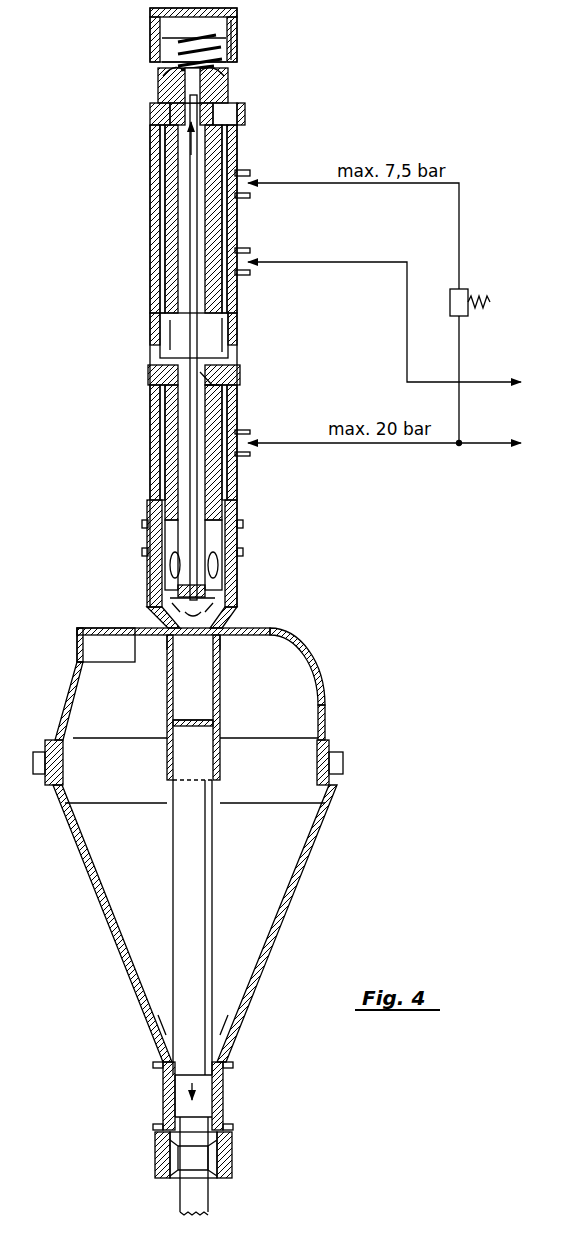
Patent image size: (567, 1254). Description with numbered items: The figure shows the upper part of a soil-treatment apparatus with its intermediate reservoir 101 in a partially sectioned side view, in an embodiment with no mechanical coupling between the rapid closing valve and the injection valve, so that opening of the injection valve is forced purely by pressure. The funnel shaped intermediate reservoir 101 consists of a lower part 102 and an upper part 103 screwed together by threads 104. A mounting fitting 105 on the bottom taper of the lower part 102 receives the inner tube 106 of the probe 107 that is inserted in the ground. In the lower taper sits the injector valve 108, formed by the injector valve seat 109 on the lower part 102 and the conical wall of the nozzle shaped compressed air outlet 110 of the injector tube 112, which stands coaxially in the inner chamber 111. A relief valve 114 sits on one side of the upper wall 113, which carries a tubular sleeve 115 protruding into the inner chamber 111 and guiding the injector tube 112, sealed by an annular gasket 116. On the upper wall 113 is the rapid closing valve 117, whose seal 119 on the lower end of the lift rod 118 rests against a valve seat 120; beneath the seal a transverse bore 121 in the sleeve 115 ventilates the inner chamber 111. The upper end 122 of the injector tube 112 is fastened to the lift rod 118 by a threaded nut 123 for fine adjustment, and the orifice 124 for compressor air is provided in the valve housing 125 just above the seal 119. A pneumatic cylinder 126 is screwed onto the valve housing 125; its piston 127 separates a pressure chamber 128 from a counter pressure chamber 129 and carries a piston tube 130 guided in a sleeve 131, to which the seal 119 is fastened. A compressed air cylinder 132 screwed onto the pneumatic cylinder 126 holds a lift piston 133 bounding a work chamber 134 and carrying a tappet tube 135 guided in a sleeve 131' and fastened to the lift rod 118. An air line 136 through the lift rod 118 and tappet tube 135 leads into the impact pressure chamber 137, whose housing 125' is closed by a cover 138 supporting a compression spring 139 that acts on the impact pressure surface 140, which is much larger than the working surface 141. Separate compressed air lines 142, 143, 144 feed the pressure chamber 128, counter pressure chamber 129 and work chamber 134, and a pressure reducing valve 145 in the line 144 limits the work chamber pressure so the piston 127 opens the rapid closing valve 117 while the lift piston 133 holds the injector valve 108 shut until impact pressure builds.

The intermediate reservoir 101 is at (322, 829).
The lower part 102 is at (283, 915).
The upper part 103 is at (323, 700).
The threads 104 is at (339, 745).
The mounting fitting 105 is at (226, 1106).
The inner tube 106 is at (212, 1195).
The probe 107 is at (174, 1194).
The injector valve 108 is at (240, 1075).
The injector valve seat 109 is at (170, 1072).
The compressed air outlet 110 is at (186, 1080).
The inner chamber 111 is at (219, 784).
The injector tube 112 is at (180, 877).
The upper wall 113 is at (152, 628).
The relief valve 114 is at (88, 645).
The tubular sleeve 115 is at (221, 757).
The annular gasket 116 is at (185, 727).
The rapid closing valve 117 is at (250, 593).
The lift rod 118 is at (207, 528).
The seal 119 is at (176, 592).
The valve seat 120 is at (223, 605).
The transverse bore 121 is at (217, 637).
The upper end 122 is at (177, 615).
The threaded nut 123 is at (196, 612).
The orifice 124 is at (213, 565).
The valve housing 125 is at (170, 564).
The housing 125' is at (259, 41).
The pneumatic cylinder 126 is at (242, 377).
The piston 127 is at (168, 383).
The pressure chamber 128 is at (215, 388).
The counter pressure chamber 129 is at (215, 350).
The piston tube 130 is at (170, 497).
The sleeve 131 is at (174, 442).
The sleeve 131' is at (164, 219).
The compressed air cylinder 132 is at (242, 113).
The lift piston 133 is at (158, 86).
The work chamber 134 is at (168, 118).
The tappet tube 135 is at (183, 192).
The air line 136 is at (165, 350).
The impact pressure chamber 137 is at (160, 55).
The cover 138 is at (150, 14).
The compression spring 139 is at (205, 45).
The impact pressure surface 140 is at (215, 68).
The working surface 141 is at (151, 110).
The pressure line 142 is at (430, 446).
The compressed air line 143 is at (407, 355).
The pressure line 144 is at (460, 230).
The pressure reducing valve 145 is at (466, 292).